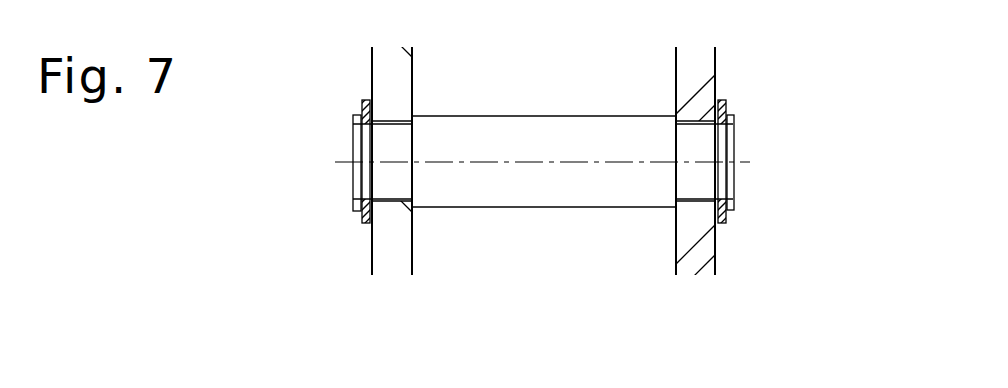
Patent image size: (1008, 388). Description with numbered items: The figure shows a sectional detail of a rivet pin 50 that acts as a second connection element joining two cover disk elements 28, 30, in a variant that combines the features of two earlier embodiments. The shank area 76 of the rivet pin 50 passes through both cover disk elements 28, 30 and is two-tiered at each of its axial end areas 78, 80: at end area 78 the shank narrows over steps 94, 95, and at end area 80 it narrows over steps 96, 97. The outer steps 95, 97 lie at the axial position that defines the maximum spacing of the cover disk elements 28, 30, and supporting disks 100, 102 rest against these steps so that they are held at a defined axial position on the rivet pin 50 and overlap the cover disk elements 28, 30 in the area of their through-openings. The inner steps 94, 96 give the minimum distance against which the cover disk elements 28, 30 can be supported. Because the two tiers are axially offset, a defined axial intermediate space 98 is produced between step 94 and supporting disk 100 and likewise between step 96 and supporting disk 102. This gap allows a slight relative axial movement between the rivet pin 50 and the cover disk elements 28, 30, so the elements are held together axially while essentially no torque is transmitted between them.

The cover disk element 28 is at (390, 262).
The cover disk element 30 is at (707, 255).
The rivet pin 50 is at (540, 72).
The shank area 76 is at (578, 114).
The end area 78 is at (354, 80).
The end area 80 is at (727, 84).
The transition step 94 is at (413, 118).
The step 95 is at (366, 125).
The transition step 96 is at (721, 106).
The step 97 is at (721, 192).
The axial intermediate space 98 is at (365, 232).
The supporting disk 100 is at (357, 200).
The supporting disk 102 is at (734, 121).